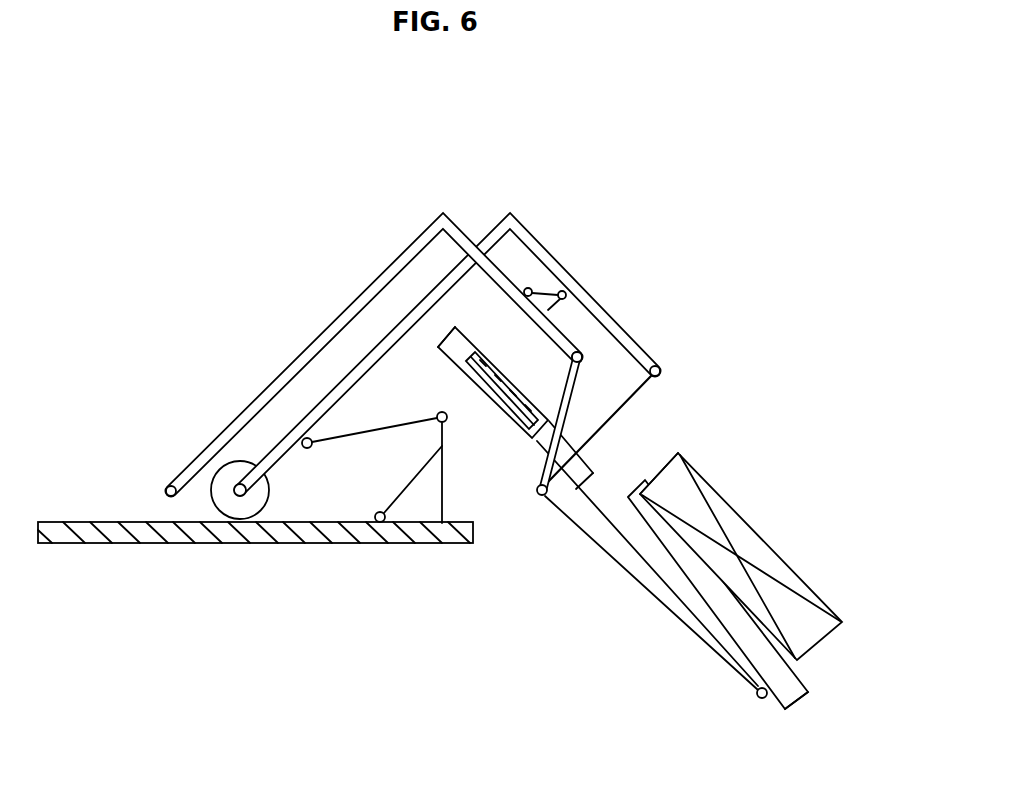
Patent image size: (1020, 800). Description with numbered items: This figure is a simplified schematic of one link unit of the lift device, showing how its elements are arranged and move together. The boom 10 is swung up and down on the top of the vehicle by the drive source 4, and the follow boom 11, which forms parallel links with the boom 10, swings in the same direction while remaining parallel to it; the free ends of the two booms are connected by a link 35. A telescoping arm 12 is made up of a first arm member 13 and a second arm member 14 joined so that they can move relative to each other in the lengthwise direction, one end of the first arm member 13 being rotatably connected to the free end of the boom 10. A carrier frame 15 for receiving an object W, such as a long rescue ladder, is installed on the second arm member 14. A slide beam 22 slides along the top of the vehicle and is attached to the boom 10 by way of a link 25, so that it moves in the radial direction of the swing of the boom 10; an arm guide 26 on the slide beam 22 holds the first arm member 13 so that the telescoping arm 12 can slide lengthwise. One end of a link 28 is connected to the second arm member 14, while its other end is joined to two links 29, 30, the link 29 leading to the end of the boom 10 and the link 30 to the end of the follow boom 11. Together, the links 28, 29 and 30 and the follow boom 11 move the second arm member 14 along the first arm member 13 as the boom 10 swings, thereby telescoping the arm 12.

The drive source 4 is at (233, 470).
The boom 10 is at (510, 210).
The follow boom 11 is at (444, 209).
The telescoping arm 12 is at (640, 454).
The first arm member 13 is at (443, 330).
The second arm member 14 is at (707, 622).
The carrier frame 15 is at (803, 675).
The slide beam 22 is at (316, 547).
The link 25 is at (387, 427).
The arm guide 26 is at (509, 427).
The link 28 is at (613, 563).
The link 29 is at (640, 383).
The link 30 is at (562, 395).
The link 35 is at (563, 272).
The object W is at (765, 540).